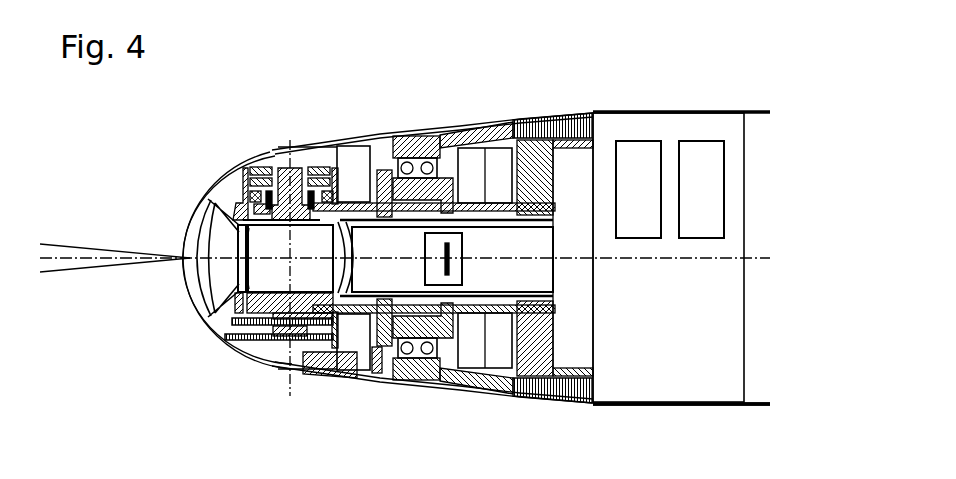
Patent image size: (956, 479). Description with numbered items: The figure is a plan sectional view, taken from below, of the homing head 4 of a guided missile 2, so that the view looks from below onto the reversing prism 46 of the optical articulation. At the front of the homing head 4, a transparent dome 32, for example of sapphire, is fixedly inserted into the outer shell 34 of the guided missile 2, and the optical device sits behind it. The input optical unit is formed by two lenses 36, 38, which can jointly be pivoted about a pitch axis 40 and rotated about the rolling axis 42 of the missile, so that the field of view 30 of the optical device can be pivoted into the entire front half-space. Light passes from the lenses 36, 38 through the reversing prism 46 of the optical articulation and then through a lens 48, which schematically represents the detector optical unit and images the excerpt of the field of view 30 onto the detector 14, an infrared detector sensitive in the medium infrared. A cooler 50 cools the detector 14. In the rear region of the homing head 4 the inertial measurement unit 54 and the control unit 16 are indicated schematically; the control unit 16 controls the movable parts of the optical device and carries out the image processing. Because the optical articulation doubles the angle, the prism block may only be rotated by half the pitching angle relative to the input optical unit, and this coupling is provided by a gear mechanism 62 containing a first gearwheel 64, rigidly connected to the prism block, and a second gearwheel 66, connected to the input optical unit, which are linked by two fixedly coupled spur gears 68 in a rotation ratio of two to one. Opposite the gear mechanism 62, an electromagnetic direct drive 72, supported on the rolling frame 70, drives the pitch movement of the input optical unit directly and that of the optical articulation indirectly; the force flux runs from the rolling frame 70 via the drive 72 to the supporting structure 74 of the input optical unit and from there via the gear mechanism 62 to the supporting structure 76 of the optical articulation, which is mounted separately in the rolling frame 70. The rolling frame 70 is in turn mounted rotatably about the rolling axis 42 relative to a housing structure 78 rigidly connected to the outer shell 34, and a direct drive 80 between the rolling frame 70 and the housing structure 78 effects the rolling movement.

The guided missile 2 is at (598, 93).
The homing head 4 is at (354, 128).
The detector 14 is at (452, 256).
The control unit 16 is at (712, 240).
The field of view 30 is at (90, 249).
The transparent dome 32 is at (183, 252).
The outer shell 34 is at (342, 380).
The lens 36 is at (200, 232).
The lens 38 is at (237, 276).
The pitch axis 40 is at (289, 131).
The rolling axis 42 is at (665, 260).
The reversing prism 46 is at (285, 253).
The lens 48 is at (346, 266).
The cooler 50 is at (538, 282).
The inertial measurement unit 54 is at (636, 240).
The gear mechanism 62 is at (246, 344).
The first gearwheel 64 is at (237, 335).
The second gearwheel 66 is at (232, 318).
The spur gears 68 is at (370, 378).
The rolling frame 70 is at (383, 168).
The electromagnetic direct drive 72 is at (314, 166).
The supporting structure 74 is at (241, 192).
The supporting structure 76 is at (277, 303).
The housing structure 78 is at (433, 133).
The direct drive 80 is at (484, 157).